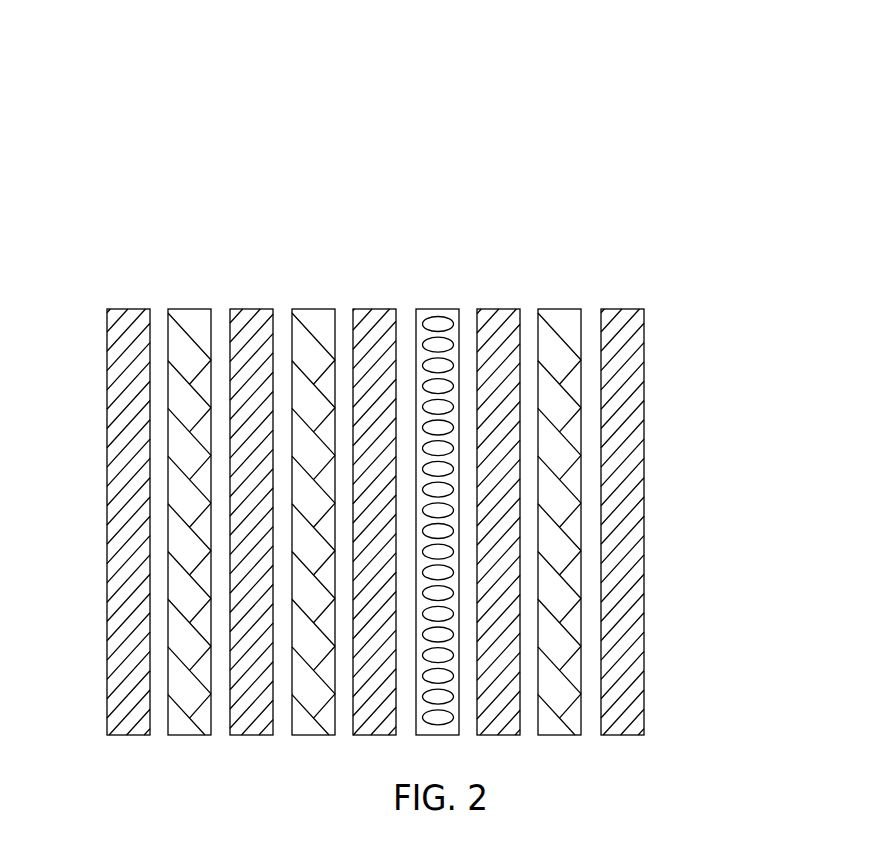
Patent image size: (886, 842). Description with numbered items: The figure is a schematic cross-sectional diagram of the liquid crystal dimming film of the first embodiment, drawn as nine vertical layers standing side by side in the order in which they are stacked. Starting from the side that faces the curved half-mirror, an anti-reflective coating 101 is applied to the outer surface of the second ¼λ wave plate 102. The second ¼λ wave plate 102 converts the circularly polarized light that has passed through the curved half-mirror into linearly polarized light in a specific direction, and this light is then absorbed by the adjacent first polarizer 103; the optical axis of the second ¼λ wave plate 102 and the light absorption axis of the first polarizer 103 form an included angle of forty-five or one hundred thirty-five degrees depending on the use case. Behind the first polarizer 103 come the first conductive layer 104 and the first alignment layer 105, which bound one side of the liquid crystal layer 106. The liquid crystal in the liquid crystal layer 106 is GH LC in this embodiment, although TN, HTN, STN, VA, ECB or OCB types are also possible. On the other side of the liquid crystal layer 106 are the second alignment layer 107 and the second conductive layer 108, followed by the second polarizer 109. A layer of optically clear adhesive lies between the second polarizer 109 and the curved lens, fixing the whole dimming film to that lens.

The anti-reflective coating 101 is at (128, 309).
The second ¼λ wave plate 102 is at (189, 309).
The first polarizer 103 is at (253, 309).
The first conductive layer 104 is at (312, 309).
The first alignment layer 105 is at (375, 309).
The liquid crystal layer 106 is at (438, 309).
The second alignment layer 107 is at (498, 309).
The second conductive layer 108 is at (560, 309).
The second polarizer 109 is at (621, 309).